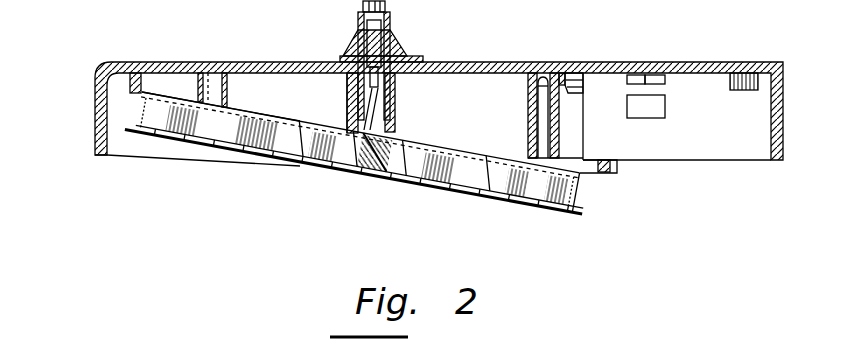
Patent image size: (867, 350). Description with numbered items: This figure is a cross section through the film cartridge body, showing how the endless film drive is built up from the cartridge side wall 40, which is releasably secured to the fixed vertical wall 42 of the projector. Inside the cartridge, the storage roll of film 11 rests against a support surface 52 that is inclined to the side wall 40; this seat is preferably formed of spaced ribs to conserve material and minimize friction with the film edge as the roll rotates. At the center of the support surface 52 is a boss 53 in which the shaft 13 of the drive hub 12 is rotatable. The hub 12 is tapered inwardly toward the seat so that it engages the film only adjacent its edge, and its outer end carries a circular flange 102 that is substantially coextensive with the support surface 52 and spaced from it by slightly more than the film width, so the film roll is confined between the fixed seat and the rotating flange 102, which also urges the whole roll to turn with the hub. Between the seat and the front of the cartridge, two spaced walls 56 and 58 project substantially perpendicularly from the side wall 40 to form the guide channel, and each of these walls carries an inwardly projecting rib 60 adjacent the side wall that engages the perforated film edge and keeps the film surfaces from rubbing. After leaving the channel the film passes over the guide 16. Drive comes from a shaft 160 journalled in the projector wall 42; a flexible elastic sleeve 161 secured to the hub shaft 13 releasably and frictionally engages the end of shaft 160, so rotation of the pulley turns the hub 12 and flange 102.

The side wall 40 is at (284, 62).
The vertical wall 42 is at (420, 57).
The shaft 160 is at (386, 8).
The flexible elastic sleeve 161 is at (397, 88).
The shaft 13 is at (397, 122).
The boss 53 is at (348, 105).
The support surface 52 is at (272, 118).
The hub 12 is at (356, 156).
The film 11 is at (366, 157).
The circular flange 102 is at (354, 169).
The wall 56 is at (528, 130).
The rib 60 is at (550, 73).
The wall 58 is at (560, 137).
The guide 16 is at (735, 91).